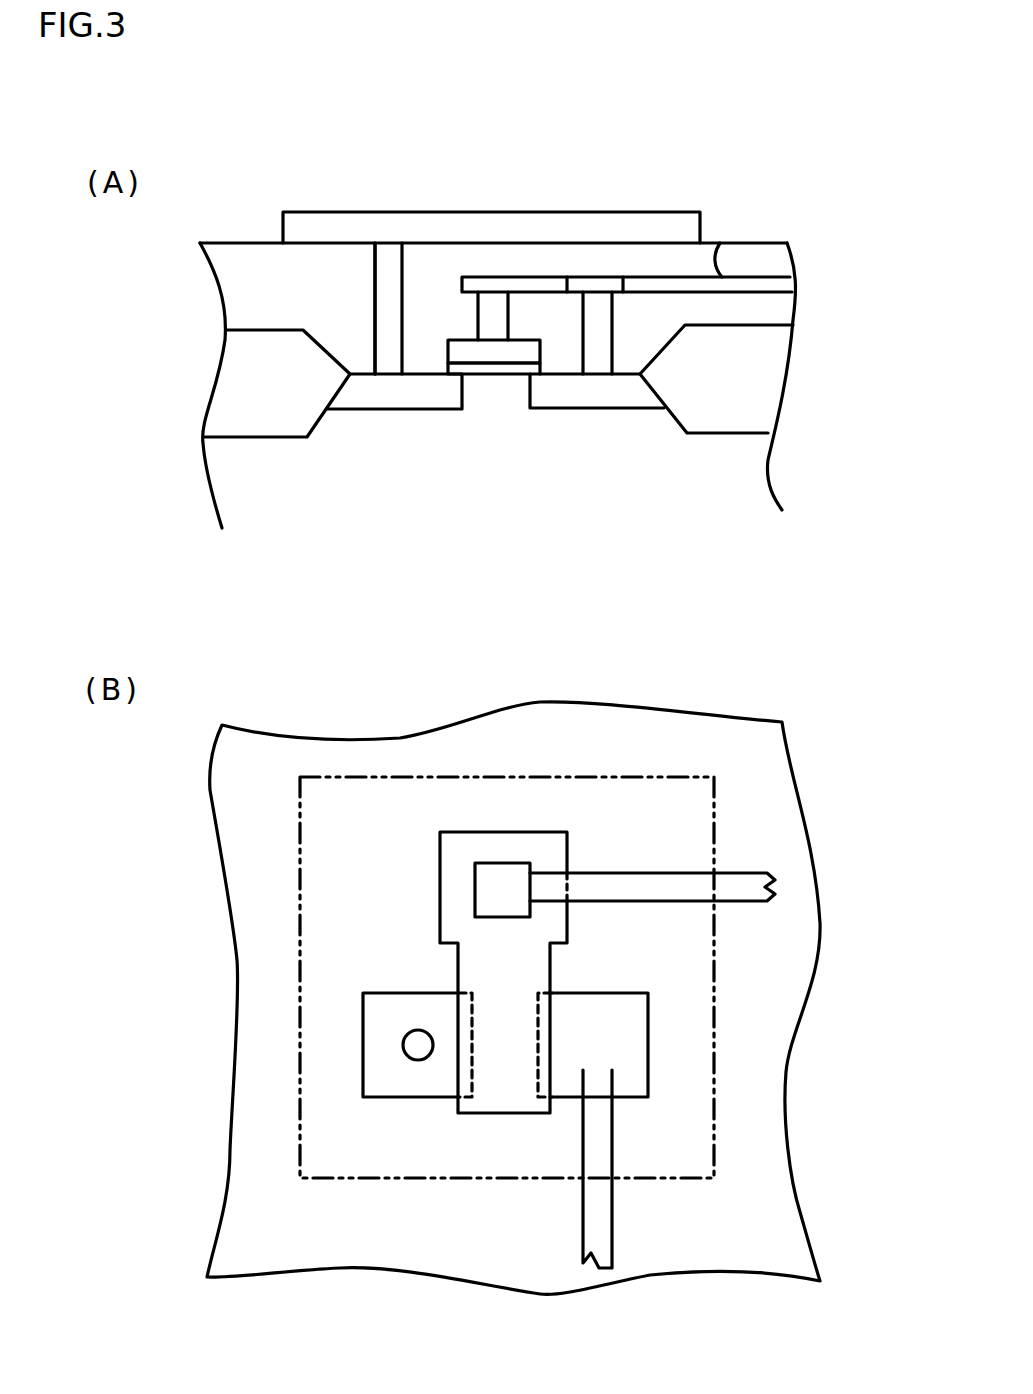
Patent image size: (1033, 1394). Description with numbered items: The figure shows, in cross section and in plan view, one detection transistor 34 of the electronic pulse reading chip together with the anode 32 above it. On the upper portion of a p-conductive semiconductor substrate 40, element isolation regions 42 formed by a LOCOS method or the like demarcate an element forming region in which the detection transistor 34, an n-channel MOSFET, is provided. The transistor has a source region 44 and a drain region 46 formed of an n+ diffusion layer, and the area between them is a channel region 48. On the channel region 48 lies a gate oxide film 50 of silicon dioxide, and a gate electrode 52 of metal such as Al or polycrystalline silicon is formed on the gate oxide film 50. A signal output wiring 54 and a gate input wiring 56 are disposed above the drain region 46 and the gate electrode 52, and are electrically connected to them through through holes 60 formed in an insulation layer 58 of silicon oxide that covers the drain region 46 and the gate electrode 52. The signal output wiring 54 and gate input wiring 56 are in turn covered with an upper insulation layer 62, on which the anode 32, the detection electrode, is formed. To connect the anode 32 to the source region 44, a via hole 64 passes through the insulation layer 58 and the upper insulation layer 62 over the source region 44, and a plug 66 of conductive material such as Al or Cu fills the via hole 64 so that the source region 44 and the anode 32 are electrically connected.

The anode 32 is at (480, 211).
The detection transistor 34 is at (538, 434).
The p-conductive semiconductor substrate 40 is at (232, 477).
The element isolation region 42 is at (243, 362).
The source region 44 is at (357, 413).
The drain region 46 is at (618, 408).
The channel region 48 is at (483, 384).
The gate oxide film 50 is at (445, 412).
The gate electrode 52 is at (460, 337).
The signal output wiring 54 is at (595, 283).
The gate input wiring 56 is at (736, 240).
The insulation layer 58 is at (775, 310).
The through hole 60 is at (610, 320).
The upper insulation layer 62 is at (750, 253).
The via hole 64 is at (372, 289).
The plug 66 is at (385, 296).